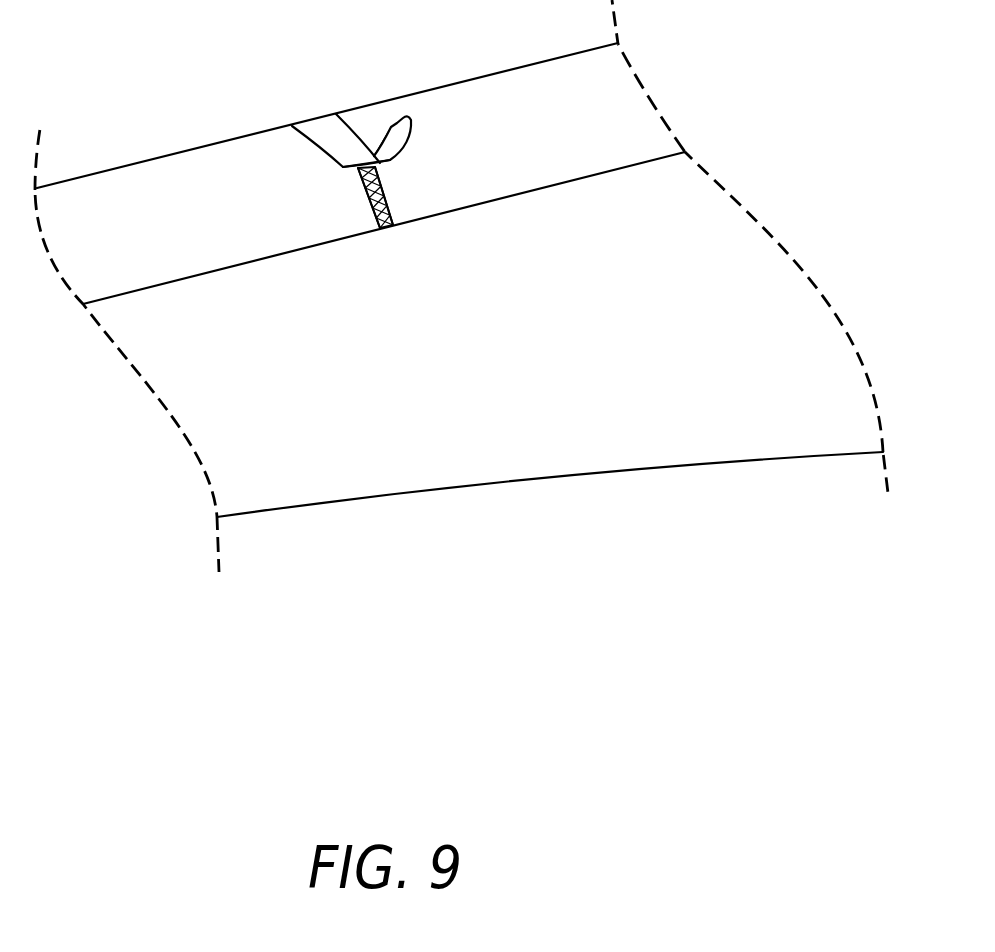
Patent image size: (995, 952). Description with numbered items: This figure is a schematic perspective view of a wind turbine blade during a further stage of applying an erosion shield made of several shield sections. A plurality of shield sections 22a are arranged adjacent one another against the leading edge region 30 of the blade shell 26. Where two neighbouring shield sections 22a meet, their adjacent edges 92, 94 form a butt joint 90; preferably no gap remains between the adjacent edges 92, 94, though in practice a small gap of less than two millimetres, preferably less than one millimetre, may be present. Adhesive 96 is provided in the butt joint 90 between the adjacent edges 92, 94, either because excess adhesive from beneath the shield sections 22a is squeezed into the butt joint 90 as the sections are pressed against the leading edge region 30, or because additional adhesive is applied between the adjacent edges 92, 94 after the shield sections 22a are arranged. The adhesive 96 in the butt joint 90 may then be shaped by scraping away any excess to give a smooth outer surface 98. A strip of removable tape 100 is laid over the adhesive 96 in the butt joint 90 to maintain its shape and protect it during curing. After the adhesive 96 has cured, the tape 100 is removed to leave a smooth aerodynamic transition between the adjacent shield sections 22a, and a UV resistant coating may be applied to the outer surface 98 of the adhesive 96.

The shield sections 22a is at (148, 200).
The blade shell 26 is at (580, 459).
The leading edge region 30 is at (542, 206).
The butt joint 90 is at (386, 244).
The adjacent edge 92 is at (361, 210).
The adjacent edge 94 is at (401, 211).
The adhesive 96 is at (358, 188).
The smooth outer surface 98 is at (385, 188).
The strip of removable tape 100 is at (352, 138).